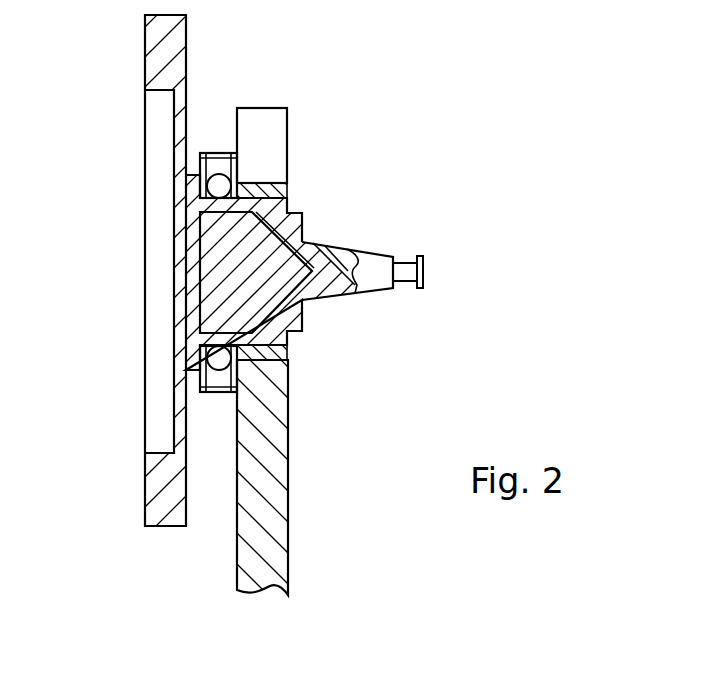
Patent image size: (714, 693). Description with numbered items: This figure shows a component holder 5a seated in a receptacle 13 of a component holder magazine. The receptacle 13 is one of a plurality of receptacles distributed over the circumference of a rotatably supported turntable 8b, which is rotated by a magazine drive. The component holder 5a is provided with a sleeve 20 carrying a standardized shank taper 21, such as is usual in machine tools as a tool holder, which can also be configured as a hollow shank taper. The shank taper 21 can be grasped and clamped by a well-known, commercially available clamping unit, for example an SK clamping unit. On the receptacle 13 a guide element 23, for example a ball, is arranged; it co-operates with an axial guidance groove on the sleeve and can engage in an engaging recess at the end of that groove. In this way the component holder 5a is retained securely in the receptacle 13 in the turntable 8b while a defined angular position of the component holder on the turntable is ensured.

The component holder 5a is at (168, 66).
The turntable 8b is at (258, 135).
The sleeve 20 is at (293, 213).
The shank taper 21 is at (373, 252).
The guide element 23 is at (215, 186).
The receptacle 13 is at (288, 362).